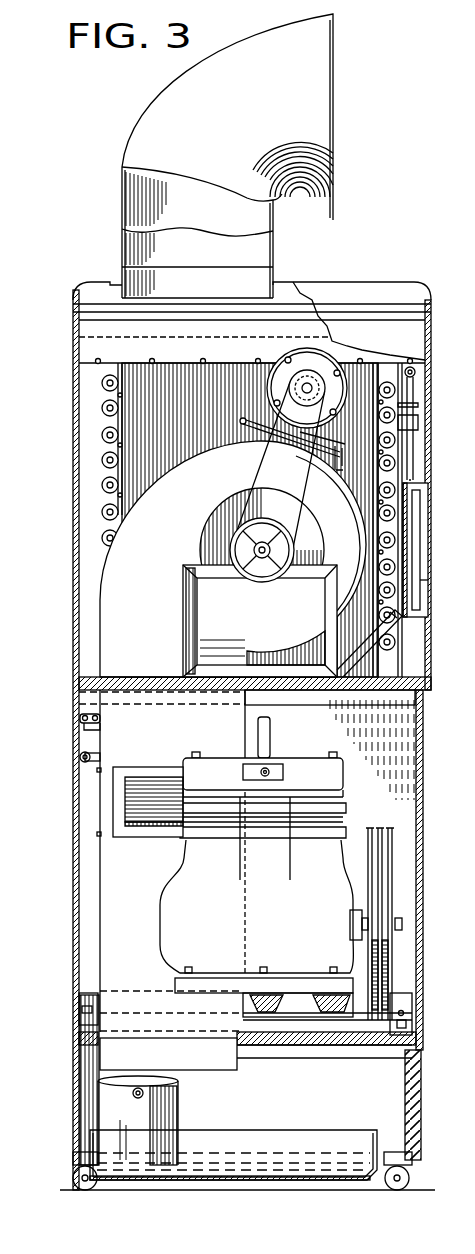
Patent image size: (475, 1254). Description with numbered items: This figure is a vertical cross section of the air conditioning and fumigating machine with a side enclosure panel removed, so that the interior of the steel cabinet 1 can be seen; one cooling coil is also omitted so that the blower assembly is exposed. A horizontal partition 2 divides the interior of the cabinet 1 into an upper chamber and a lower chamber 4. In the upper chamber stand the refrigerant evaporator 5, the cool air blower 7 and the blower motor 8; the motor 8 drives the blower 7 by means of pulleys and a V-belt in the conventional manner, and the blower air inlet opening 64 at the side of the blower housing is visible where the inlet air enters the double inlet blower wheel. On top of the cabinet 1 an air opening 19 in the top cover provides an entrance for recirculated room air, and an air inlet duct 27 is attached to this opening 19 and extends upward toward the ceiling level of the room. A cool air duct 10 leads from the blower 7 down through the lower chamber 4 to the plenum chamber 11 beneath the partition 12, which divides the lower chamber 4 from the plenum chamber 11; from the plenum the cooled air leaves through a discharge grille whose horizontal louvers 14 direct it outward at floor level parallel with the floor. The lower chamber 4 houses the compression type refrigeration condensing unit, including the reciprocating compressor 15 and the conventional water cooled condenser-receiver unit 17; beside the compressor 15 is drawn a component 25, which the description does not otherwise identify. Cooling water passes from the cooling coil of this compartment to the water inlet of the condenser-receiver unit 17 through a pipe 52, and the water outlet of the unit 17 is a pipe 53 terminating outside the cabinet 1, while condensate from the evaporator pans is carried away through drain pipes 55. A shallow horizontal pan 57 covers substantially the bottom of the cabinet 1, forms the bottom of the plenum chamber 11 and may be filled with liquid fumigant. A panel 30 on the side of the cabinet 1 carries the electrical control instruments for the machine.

The steel cabinet 1 is at (447, 376).
The horizontal partition 2 is at (305, 690).
The lower chamber 4 is at (390, 792).
The refrigerant evaporator 5 is at (118, 450).
The cool air blower 7 is at (160, 546).
The blower motor 8 is at (273, 372).
The cool air duct 10 is at (138, 939).
The plenum chamber 11 is at (415, 1053).
The partition 12 is at (346, 1046).
The horizontal louvers 14 is at (366, 288).
The reciprocating compressor 15 is at (210, 862).
The water cooled condenser-receiver unit 17 is at (178, 1105).
The air opening 19 is at (233, 277).
The compressor attachment 25 is at (152, 820).
The air inlet duct 27 is at (122, 201).
The panel 30 is at (428, 583).
The pipe 52 is at (100, 728).
The pipe 53 is at (98, 716).
The drain pipe 55 is at (92, 755).
The shallow horizontal pan 57 is at (225, 1140).
The blower air inlet opening 64 is at (234, 507).